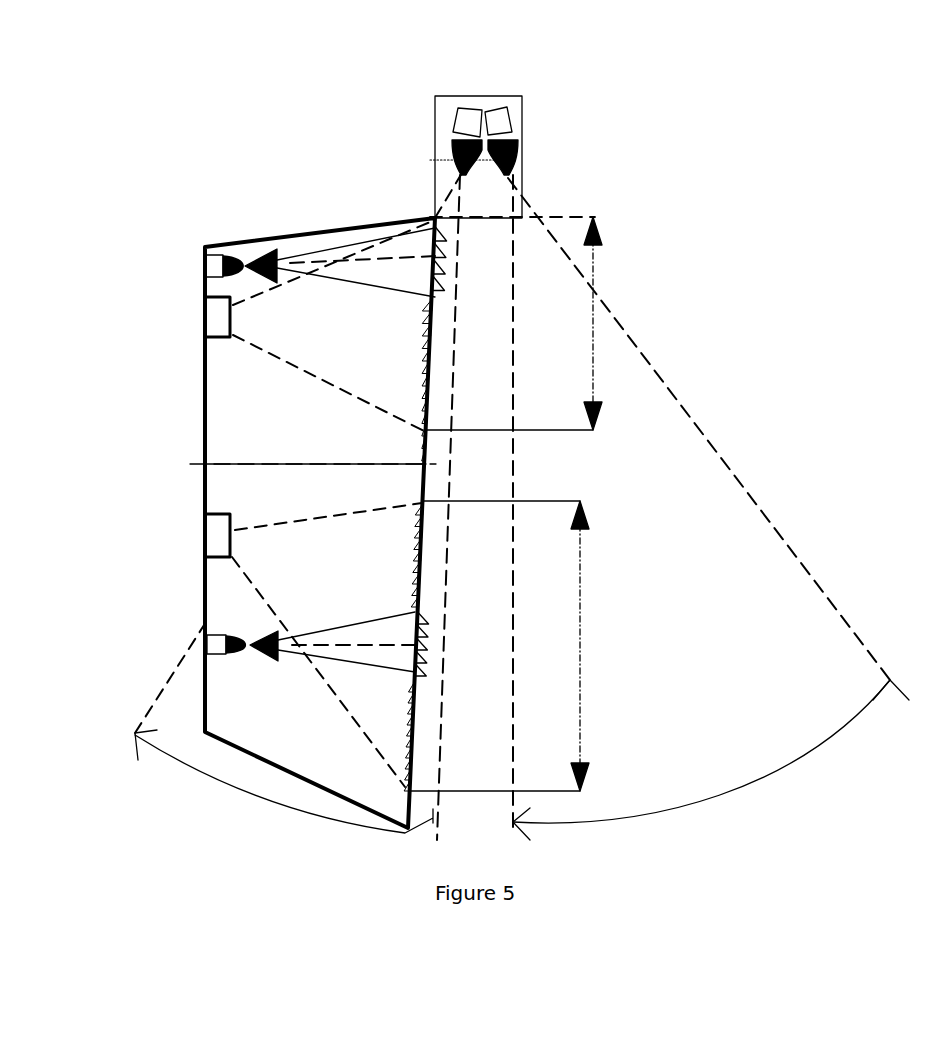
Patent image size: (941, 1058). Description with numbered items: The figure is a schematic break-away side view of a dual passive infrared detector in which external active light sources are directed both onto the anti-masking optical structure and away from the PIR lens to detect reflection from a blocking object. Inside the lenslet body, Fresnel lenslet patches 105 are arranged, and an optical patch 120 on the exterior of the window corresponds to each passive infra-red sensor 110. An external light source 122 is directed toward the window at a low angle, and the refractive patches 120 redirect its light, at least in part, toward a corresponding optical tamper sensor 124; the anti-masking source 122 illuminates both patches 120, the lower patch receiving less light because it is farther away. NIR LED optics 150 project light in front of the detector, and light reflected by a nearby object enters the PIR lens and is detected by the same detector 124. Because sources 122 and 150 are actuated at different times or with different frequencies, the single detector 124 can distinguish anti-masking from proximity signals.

The external light source 122 is at (470, 118).
The NIR LED optics 150 is at (510, 108).
The optical patch 120 is at (435, 257).
The Fresnel lenslet patches 105 is at (435, 332).
The optical tamper sensor 124 is at (222, 262).
The passive infra-red sensor 110 is at (215, 315).